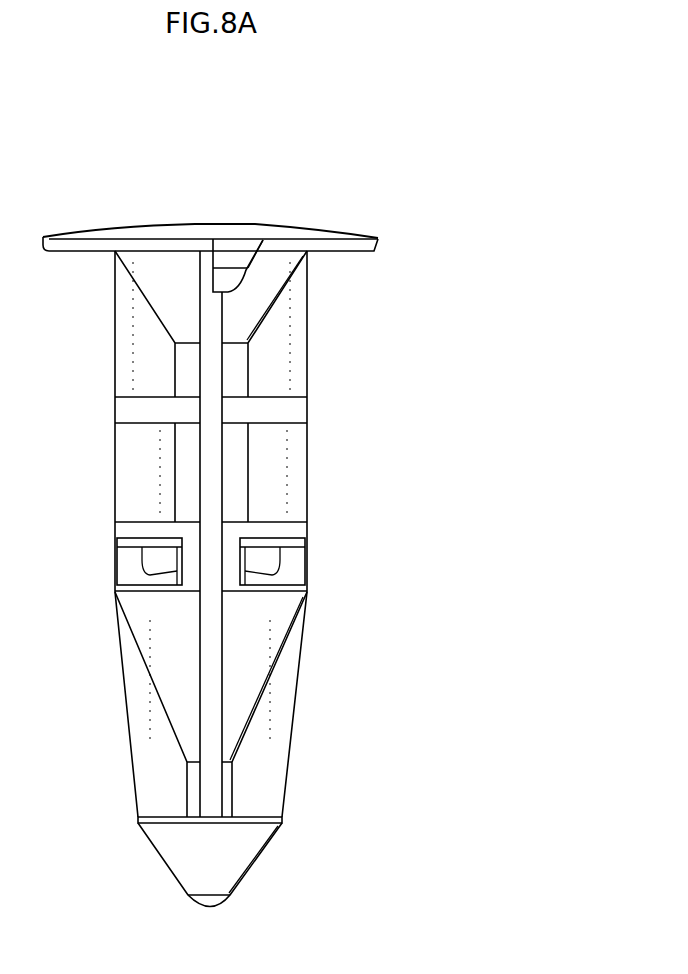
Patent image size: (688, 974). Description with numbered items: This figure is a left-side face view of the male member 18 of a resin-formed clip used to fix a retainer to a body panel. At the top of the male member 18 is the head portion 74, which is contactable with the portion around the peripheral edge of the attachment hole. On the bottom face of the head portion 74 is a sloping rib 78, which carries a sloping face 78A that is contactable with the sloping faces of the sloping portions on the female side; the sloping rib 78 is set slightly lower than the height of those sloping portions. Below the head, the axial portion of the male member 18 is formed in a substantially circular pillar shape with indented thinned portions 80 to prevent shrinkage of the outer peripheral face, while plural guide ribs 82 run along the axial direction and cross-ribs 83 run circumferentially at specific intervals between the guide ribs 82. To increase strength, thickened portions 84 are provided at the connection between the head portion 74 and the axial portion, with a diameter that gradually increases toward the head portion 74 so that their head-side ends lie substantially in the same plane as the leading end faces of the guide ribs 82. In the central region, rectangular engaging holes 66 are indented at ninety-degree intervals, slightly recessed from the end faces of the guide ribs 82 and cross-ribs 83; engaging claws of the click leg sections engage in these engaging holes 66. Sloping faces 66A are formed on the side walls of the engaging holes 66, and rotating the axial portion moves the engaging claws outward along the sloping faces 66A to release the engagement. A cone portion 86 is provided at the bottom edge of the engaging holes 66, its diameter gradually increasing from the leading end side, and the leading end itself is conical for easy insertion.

The male member 18 is at (287, 186).
The head portion 74 is at (323, 236).
The sloping rib 78 is at (225, 258).
The sloping face 78A is at (253, 262).
The thickened portion 84 is at (273, 290).
The indented thinned portion 80 is at (241, 367).
The cross-rib 83 is at (288, 414).
The guide rib 82 is at (216, 448).
The engaging hole 66 is at (141, 560).
The sloping face 66A is at (128, 570).
The cone portion 86 is at (273, 627).